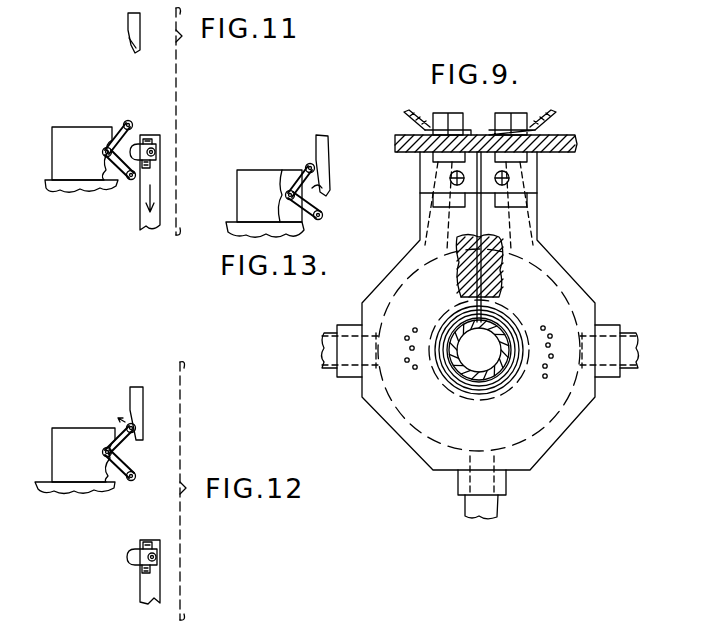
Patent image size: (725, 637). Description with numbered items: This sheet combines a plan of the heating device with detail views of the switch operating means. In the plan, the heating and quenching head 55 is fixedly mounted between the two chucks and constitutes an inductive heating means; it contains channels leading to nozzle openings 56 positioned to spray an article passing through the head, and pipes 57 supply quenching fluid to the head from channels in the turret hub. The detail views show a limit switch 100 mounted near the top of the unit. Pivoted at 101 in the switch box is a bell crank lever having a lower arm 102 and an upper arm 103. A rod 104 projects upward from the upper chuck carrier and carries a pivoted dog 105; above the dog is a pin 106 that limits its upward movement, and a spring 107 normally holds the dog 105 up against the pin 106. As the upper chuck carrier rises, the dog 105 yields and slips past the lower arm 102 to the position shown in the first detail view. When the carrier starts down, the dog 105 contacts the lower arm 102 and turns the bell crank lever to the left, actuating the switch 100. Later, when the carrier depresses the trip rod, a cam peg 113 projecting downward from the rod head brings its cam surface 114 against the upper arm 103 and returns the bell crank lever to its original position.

In FIG. 9, the heating and quenching head 55 is at (584, 285).
In FIG. 9, the nozzle openings 56 is at (548, 377).
In FIG. 9, the pipes 57 is at (330, 350).
In FIG. 11, the limit switch 100 is at (52, 150).
In FIG. 13, the limit switch 100 is at (268, 191).
In FIG. 12, the limit switch 100 is at (62, 428).
In FIG. 11, the pivot 101 is at (108, 128).
In FIG. 13, the pivot 101 is at (282, 212).
In FIG. 12, the pivot 101 is at (100, 450).
In FIG. 11, the lower arm 102 is at (128, 181).
In FIG. 13, the lower arm 102 is at (324, 215).
In FIG. 12, the lower arm 102 is at (135, 480).
In FIG. 11, the upper arm 103 is at (130, 120).
In FIG. 13, the upper arm 103 is at (306, 162).
In FIG. 12, the upper arm 103 is at (128, 423).
In FIG. 11, the rod 104 is at (160, 194).
In FIG. 12, the rod 104 is at (142, 595).
In FIG. 11, the dog 105 is at (136, 147).
In FIG. 12, the dog 105 is at (127, 558).
In FIG. 11, the pin 106 is at (153, 142).
In FIG. 12, the pin 106 is at (146, 543).
In FIG. 11, the spring 107 is at (150, 165).
In FIG. 12, the spring 107 is at (141, 572).
In FIG. 11, the cam peg 113 is at (138, 32).
In FIG. 13, the cam peg 113 is at (330, 150).
In FIG. 12, the cam peg 113 is at (131, 390).
In FIG. 11, the cam surface 114 is at (128, 40).
In FIG. 13, the cam surface 114 is at (324, 186).